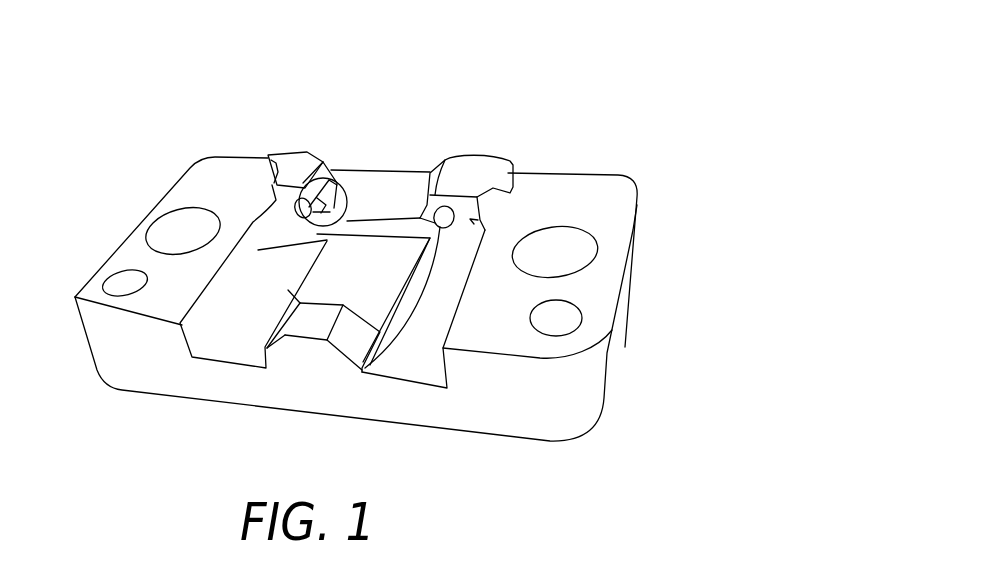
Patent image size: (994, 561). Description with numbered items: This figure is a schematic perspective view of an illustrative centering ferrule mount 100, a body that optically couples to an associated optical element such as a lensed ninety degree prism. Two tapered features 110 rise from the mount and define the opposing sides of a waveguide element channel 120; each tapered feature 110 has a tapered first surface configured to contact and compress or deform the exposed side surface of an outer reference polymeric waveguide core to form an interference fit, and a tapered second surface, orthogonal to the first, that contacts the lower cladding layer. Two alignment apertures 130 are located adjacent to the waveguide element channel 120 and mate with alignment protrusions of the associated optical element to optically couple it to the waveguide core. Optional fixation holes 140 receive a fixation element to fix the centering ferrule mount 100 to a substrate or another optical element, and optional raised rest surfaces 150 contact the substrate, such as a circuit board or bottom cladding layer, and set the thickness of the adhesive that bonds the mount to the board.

The centering ferrule mount 100 is at (583, 82).
The tapered feature 110 is at (336, 178).
The waveguide element channel 120 is at (376, 190).
The alignment aperture 130 is at (302, 212).
The fixation hole 140 is at (148, 238).
The raised rest surface 150 is at (113, 286).